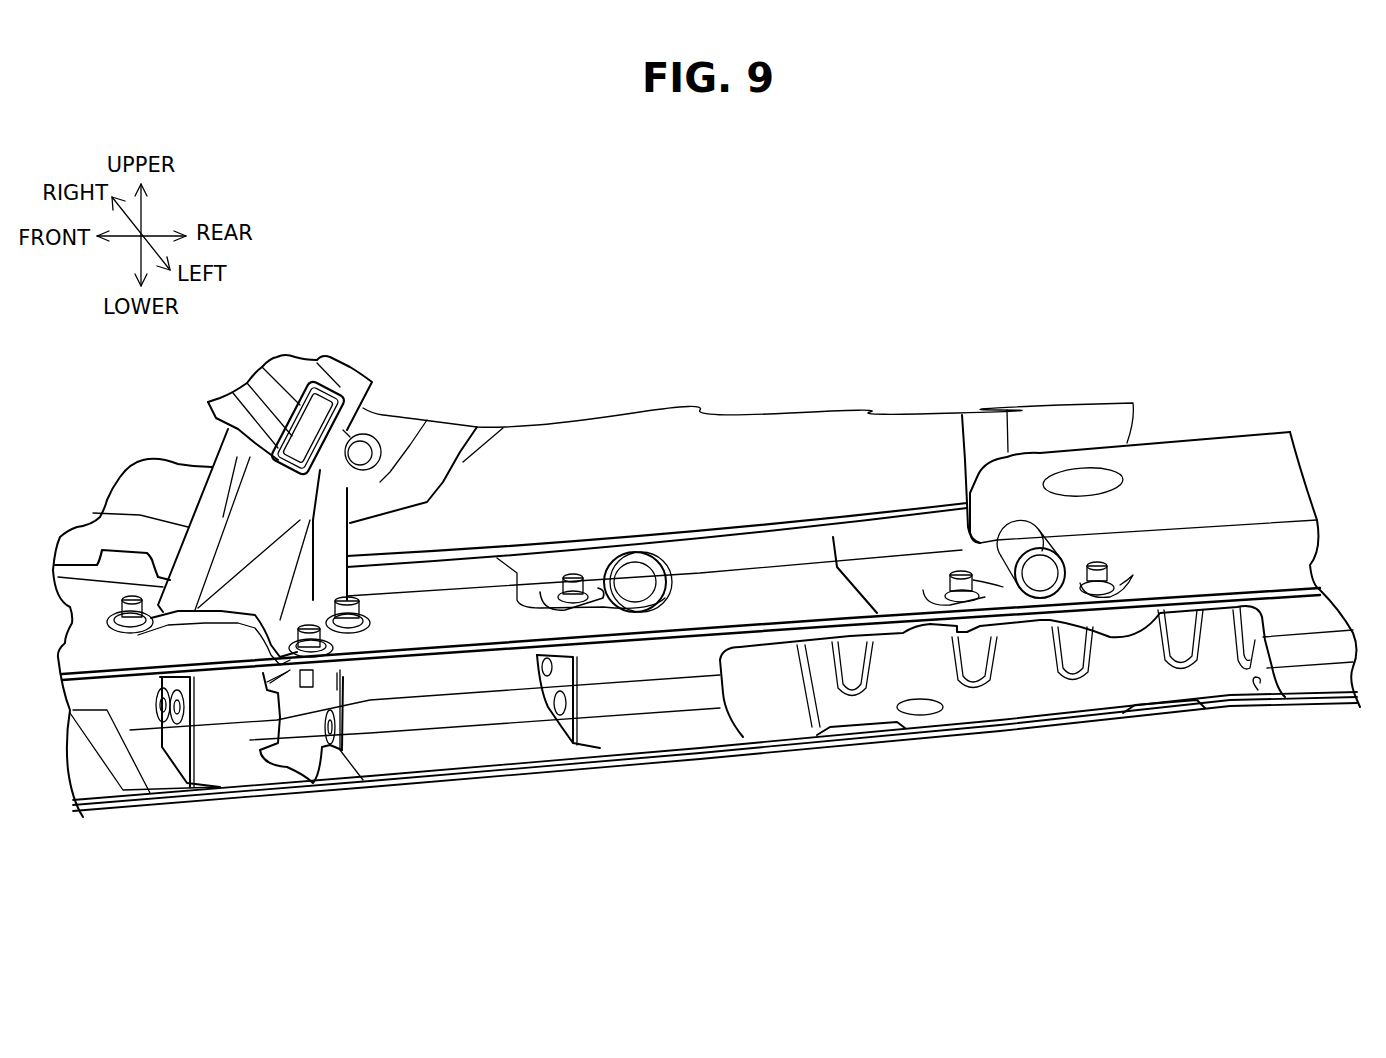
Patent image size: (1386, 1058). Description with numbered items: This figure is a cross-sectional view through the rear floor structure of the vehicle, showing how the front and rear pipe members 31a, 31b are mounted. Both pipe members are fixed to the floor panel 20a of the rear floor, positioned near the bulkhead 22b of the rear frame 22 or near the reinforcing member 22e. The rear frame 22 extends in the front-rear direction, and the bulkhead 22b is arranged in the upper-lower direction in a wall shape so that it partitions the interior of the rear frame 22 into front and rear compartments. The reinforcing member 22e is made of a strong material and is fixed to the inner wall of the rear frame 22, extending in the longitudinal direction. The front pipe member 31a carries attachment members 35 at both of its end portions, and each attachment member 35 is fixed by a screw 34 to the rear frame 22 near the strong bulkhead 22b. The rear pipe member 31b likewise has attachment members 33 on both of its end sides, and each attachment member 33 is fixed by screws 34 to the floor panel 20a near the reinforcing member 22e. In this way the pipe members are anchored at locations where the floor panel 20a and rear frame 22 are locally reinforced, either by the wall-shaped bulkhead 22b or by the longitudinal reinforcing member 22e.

The floor panel 20a is at (757, 600).
The rear frame 22 is at (450, 660).
The bulkhead 22b is at (548, 707).
The reinforcing member 22e is at (1020, 677).
The front pipe member 31a is at (623, 560).
The rear pipe member 31b is at (1022, 533).
The attachment member 33 is at (990, 543).
The screw 34 is at (573, 577).
The attachment member 35 is at (497, 557).